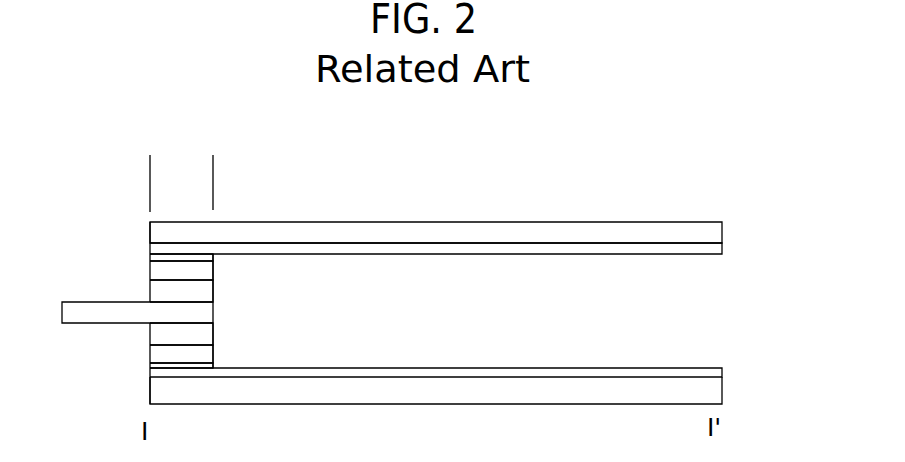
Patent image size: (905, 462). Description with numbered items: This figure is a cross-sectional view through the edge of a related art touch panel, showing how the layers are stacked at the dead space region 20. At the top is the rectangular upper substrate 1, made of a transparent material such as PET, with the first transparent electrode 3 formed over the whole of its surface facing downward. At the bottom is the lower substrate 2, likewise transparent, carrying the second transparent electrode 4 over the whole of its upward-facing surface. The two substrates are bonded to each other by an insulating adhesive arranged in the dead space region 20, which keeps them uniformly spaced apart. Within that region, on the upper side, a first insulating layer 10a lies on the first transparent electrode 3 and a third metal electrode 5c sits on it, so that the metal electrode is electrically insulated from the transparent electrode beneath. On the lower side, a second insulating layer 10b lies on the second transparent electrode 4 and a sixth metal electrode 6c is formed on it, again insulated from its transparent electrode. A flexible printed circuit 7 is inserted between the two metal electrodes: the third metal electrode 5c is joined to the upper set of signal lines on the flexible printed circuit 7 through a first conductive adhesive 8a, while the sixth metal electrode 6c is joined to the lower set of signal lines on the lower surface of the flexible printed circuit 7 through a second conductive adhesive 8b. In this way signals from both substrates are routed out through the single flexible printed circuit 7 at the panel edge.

The upper substrate 1 is at (719, 228).
The lower substrate 2 is at (714, 386).
The first transparent electrode 3 is at (719, 246).
The second transparent electrode 4 is at (714, 370).
The third metal electrode 5c is at (153, 270).
The sixth metal electrode 6c is at (152, 353).
The flexible printed circuit 7 is at (63, 311).
The first conductive adhesive 8a is at (212, 290).
The second conductive adhesive 8b is at (212, 335).
The first insulating layer 10a is at (151, 260).
The second insulating layer 10b is at (152, 366).
The dead space region 20 is at (213, 163).